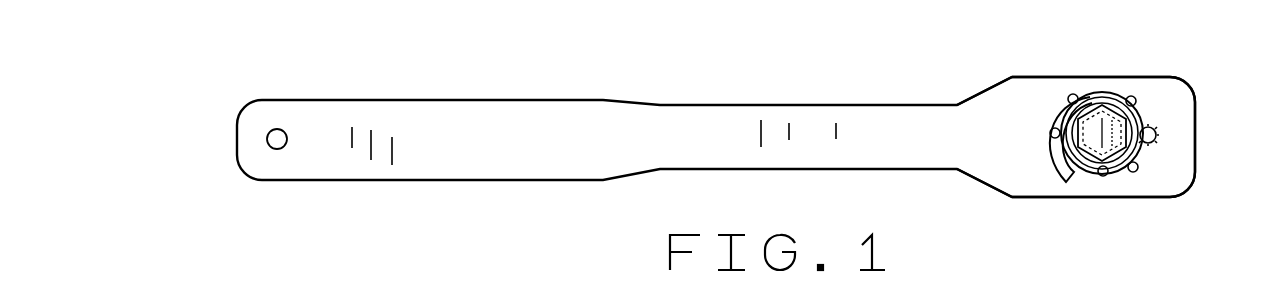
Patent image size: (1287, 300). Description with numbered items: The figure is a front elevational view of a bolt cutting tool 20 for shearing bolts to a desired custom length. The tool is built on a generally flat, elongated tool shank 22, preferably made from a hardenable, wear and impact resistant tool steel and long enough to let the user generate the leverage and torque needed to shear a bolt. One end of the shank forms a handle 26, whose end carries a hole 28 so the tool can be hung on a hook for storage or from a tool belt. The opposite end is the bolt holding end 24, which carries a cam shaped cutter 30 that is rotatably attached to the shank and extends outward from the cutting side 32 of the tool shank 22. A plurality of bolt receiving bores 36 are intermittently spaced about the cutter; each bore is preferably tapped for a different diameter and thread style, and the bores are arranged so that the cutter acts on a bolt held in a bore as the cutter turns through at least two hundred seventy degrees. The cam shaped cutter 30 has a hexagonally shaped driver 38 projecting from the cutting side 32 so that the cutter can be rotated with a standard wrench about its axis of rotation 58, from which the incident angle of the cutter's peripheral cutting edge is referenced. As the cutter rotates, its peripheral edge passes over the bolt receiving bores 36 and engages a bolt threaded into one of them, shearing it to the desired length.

The bolt cutting tool 20 is at (734, 74).
The tool shank 22 is at (912, 105).
The bolt holding end 24 is at (1195, 106).
The handle 26 is at (245, 106).
The hole 28 is at (272, 148).
The cam shaped cutter 30 is at (1101, 97).
The cutting side 32 is at (940, 145).
The bolt receiving bores 36 is at (1053, 130).
The hexagonally shaped driver 38 is at (1110, 150).
The axis of rotation 58 is at (1110, 130).